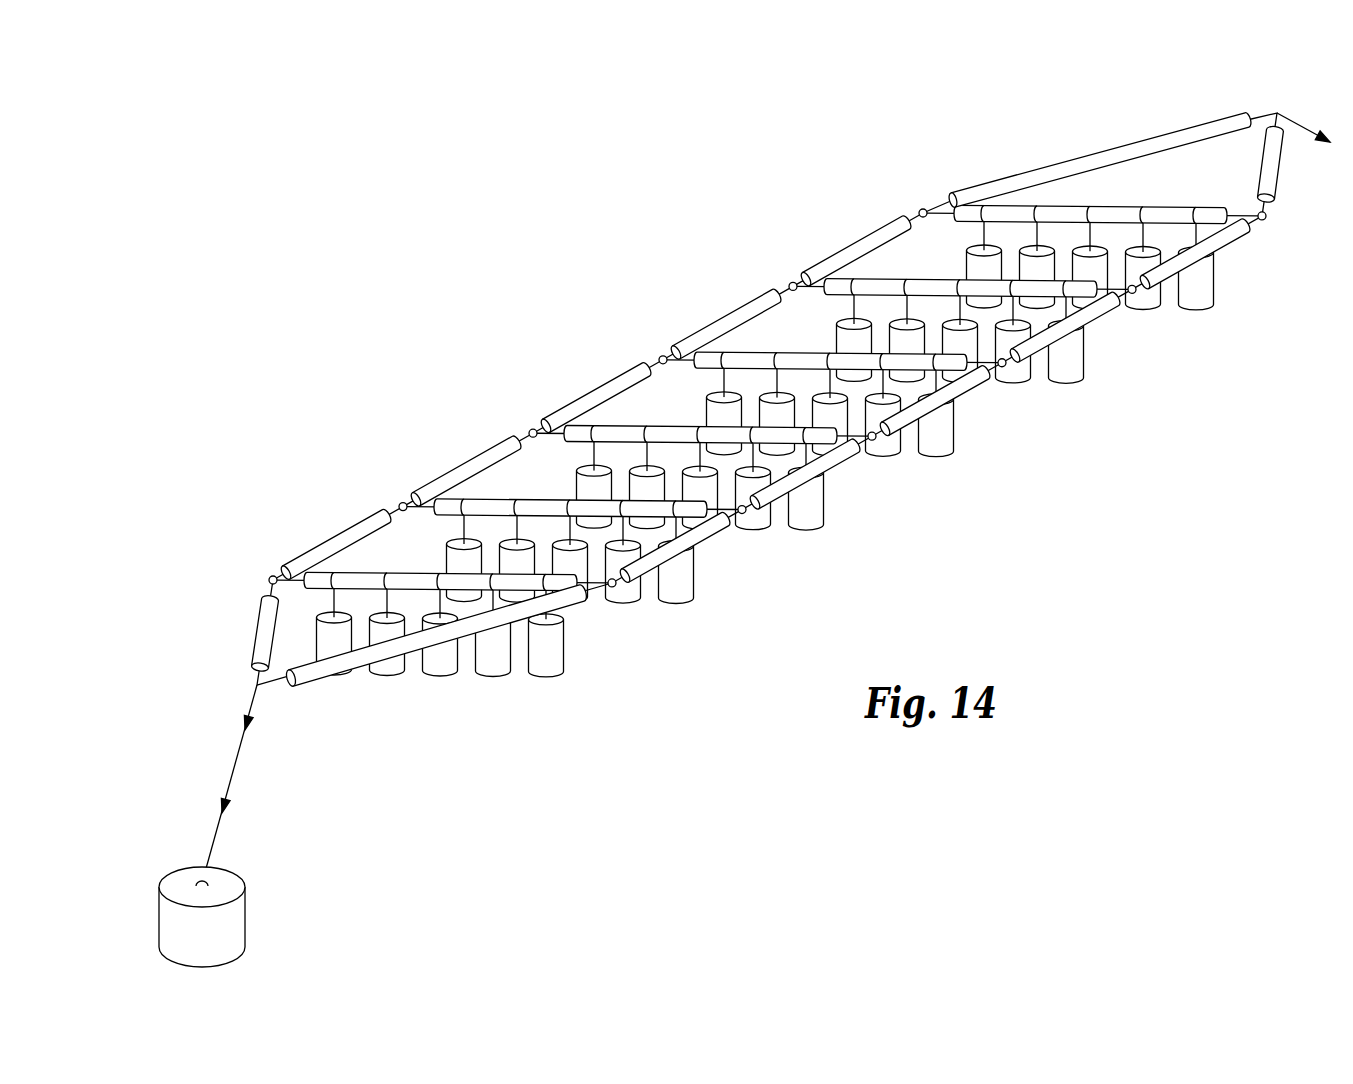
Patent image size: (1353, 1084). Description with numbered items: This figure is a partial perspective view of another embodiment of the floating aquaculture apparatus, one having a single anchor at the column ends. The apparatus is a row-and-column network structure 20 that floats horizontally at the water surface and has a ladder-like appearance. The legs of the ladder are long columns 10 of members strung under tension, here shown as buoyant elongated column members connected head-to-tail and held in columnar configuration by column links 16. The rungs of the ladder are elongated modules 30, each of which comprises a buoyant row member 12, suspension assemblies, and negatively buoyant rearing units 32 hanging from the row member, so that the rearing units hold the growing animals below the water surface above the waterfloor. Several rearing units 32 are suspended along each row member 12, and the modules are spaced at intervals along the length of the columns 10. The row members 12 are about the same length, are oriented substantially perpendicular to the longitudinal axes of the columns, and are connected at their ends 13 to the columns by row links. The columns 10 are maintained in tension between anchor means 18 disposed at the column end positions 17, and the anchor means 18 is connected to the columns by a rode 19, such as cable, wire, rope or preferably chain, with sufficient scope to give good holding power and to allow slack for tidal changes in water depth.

The column 10 is at (445, 470).
The row member 12 is at (752, 352).
The row member end 13 is at (445, 513).
The column link 16 is at (530, 432).
The column end position 17 is at (1277, 113).
The anchor means 18 is at (247, 908).
The rode 19 is at (233, 773).
The row-and-column network structure 20 is at (700, 310).
The elongated module 30 is at (877, 278).
The rearing unit 32 is at (820, 512).